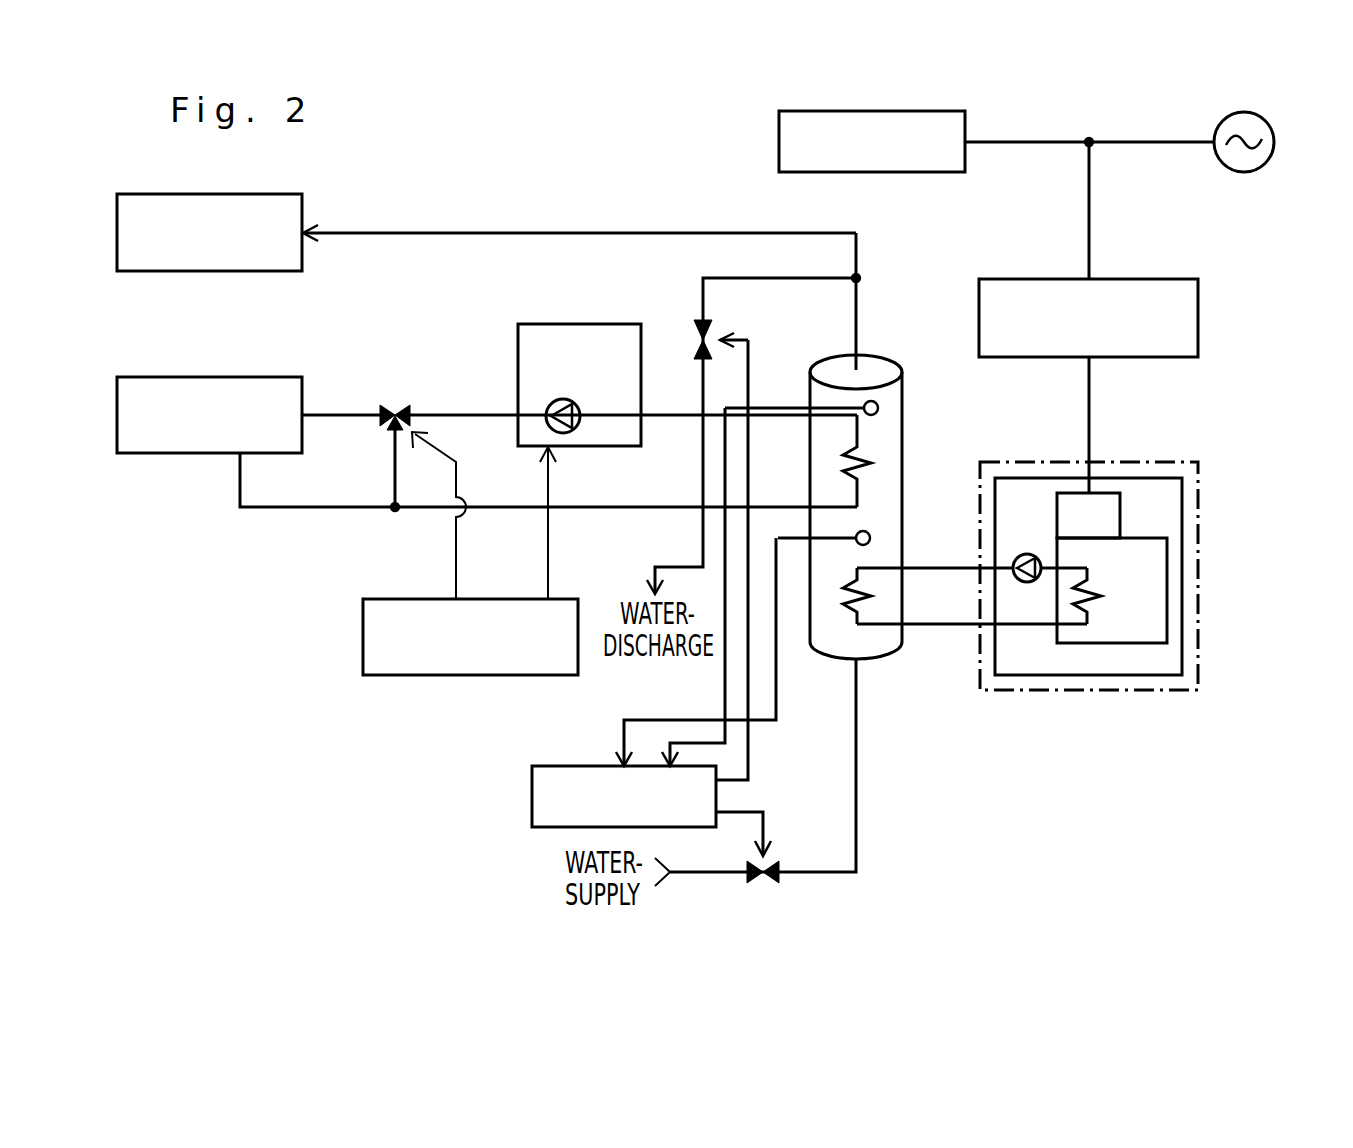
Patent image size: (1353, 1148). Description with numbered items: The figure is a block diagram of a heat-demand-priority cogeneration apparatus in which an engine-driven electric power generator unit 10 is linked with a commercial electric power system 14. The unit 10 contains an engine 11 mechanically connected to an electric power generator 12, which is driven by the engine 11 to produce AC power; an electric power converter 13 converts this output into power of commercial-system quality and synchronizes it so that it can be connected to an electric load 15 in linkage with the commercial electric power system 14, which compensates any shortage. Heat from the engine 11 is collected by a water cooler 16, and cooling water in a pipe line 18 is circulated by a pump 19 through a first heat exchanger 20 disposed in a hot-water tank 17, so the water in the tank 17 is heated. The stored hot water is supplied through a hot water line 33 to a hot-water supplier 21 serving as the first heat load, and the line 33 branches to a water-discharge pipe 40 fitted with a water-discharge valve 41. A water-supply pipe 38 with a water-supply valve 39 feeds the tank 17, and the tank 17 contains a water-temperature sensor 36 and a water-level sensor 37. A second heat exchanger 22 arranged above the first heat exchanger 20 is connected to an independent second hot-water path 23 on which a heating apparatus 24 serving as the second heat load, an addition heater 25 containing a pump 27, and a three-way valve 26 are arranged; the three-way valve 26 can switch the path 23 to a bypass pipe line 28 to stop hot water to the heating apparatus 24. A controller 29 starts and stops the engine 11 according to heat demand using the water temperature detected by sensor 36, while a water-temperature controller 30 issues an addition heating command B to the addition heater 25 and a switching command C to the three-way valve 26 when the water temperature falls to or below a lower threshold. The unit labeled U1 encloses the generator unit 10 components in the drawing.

The engine-driven electric power generator unit 10 is at (1182, 628).
The engine 11 is at (1148, 598).
The electric power generator 12 is at (1105, 515).
The electric power converter 13 is at (1198, 310).
The commercial electric power system 14 is at (1255, 172).
The electric load 15 is at (948, 172).
The water cooler 16 is at (1100, 608).
The hot-water tank 17 is at (902, 395).
The pipe line 18 is at (948, 568).
The pump 19 is at (1022, 555).
The first heat exchanger 20 is at (840, 650).
The hot-water supplier 21 is at (148, 271).
The second heat exchanger 22 is at (850, 450).
The second hot-water path 23 is at (645, 507).
The heating apparatus 24 is at (135, 453).
The addition heater 25 is at (595, 324).
The three-way valve 26 is at (385, 405).
The pump 27 is at (578, 428).
The pipe line 28 is at (395, 460).
The controller 29 is at (550, 766).
The water-temperature controller 30 is at (400, 675).
The hot water line 33 is at (655, 233).
The water-temperature sensor 36 is at (866, 530).
The water-level sensor 37 is at (876, 400).
The water-supply pipe 38 is at (856, 838).
The water-supply valve 39 is at (763, 890).
The water-discharge pipe 40 is at (740, 278).
The water-discharge valve 41 is at (700, 318).
The addition heating command B is at (548, 522).
The switching command C is at (456, 570).
The fuel cell unit U1 is at (1165, 462).